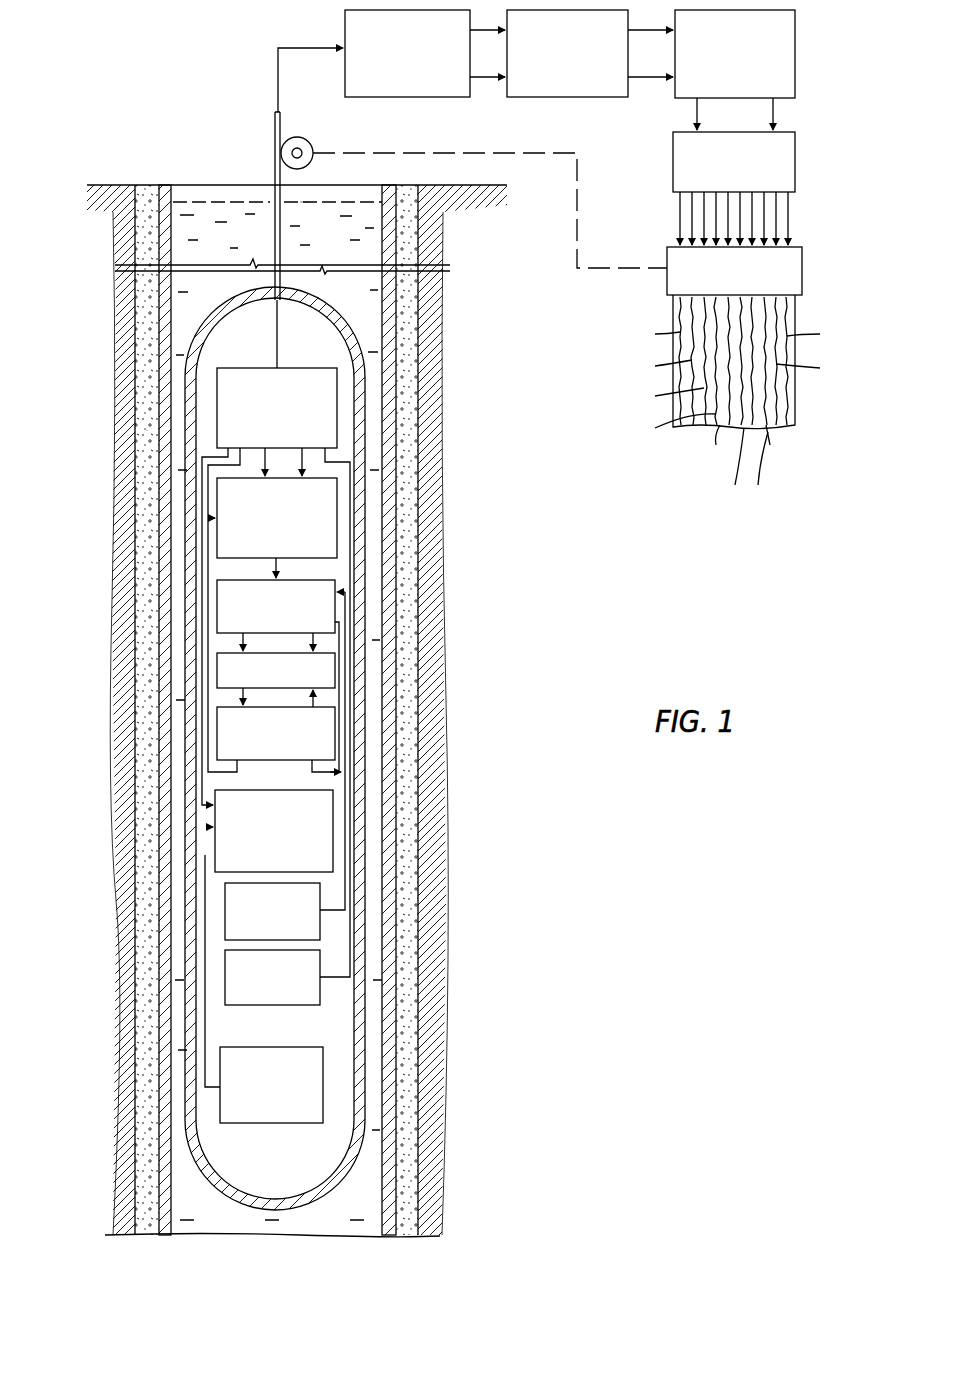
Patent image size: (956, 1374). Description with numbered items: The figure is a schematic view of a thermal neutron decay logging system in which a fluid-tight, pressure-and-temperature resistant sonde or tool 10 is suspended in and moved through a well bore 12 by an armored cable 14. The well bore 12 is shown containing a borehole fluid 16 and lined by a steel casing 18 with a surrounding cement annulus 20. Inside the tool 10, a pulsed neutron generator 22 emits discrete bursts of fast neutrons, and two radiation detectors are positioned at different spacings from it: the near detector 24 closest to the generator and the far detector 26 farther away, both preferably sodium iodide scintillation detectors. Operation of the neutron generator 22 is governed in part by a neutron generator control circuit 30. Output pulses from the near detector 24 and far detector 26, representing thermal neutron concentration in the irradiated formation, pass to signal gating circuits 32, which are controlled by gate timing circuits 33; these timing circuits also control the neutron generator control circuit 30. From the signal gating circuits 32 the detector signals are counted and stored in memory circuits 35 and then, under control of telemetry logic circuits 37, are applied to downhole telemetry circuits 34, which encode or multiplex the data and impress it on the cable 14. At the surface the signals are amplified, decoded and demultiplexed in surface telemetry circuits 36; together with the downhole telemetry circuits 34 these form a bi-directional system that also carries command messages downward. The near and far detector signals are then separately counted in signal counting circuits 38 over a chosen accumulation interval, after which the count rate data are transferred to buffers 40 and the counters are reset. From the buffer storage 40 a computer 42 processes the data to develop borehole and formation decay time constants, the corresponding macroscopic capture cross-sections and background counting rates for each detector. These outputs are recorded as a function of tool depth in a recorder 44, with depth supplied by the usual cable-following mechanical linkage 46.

The sonde or tool 10 is at (194, 334).
The well bore 12 is at (208, 176).
The armored cable 14 is at (275, 124).
The borehole fluid 16 is at (329, 228).
The steel casing 18 is at (163, 358).
The cement annulus 20 is at (147, 430).
The pulsed neutron generator 22 is at (323, 1106).
The near detector 24 is at (320, 1000).
The far detector 26 is at (320, 930).
The neutron generator control circuit 30 is at (333, 826).
The signal gating circuits 32 is at (217, 602).
The gate timing circuits 33 is at (337, 530).
The downhole telemetry circuits 34 is at (337, 413).
The memory circuits 35 is at (335, 670).
The surface telemetry circuits 36 is at (438, 98).
The telemetry logic circuits 37 is at (335, 740).
The signal counting circuits 38 is at (592, 98).
The buffers 40 is at (795, 57).
The computer 42 is at (795, 170).
The recorder 44 is at (802, 278).
The cable-following mechanical linkage 46 is at (545, 153).